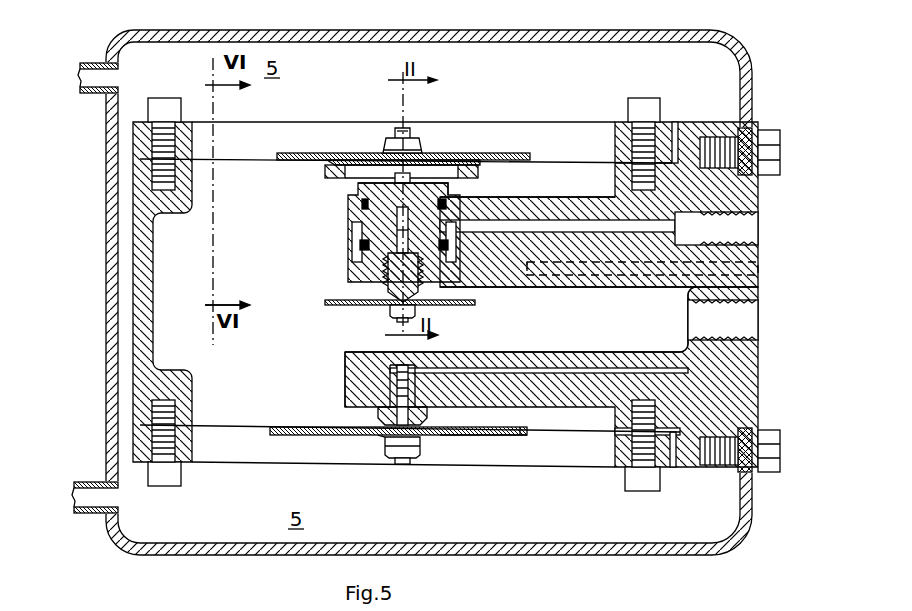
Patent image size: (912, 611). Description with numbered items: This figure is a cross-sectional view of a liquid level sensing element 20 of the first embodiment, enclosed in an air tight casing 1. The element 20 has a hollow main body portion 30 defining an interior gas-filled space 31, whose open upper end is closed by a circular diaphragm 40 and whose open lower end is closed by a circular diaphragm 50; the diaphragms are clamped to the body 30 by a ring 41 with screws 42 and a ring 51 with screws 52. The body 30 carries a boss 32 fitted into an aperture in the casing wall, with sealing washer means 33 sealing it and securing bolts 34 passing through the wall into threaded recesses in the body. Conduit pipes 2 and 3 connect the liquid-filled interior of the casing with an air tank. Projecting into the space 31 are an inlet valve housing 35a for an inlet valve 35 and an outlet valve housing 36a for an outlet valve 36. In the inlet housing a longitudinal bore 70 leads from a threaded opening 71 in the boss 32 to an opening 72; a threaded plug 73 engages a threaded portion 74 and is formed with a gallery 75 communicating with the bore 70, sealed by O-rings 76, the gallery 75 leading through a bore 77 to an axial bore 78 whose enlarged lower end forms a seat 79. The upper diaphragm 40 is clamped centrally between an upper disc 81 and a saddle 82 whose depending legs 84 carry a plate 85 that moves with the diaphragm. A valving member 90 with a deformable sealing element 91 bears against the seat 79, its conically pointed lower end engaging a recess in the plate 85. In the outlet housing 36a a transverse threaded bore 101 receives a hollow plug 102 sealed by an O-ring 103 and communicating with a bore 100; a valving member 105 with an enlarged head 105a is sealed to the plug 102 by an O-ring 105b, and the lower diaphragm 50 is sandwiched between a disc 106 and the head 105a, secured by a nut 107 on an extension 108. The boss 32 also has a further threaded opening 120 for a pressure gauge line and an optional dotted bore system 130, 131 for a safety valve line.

The casing 1 is at (650, 37).
The conduit pipe 2 is at (95, 72).
The conduit pipe 3 is at (91, 488).
The sensing element 20 is at (210, 120).
The main body portion 30 is at (150, 325).
The interior gas-filled space 31 is at (176, 310).
The boss 32 is at (748, 195).
The sealing washer means 33 is at (750, 128).
The securing bolts 34 is at (772, 145).
The inlet valve 35 is at (345, 242).
The inlet valve housing 35a is at (350, 198).
The outlet valve 36 is at (343, 366).
The outlet valve housing 36a is at (340, 356).
The diaphragm 40 is at (245, 157).
The ring 41 is at (678, 150).
The screws 42 is at (640, 116).
The diaphragm 50 is at (246, 463).
The ring 51 is at (676, 470).
The screws 52 is at (642, 492).
The bore 70 is at (555, 198).
The threaded opening 71 is at (748, 237).
The opening 72 is at (462, 200).
The threaded plug 73 is at (356, 190).
The threaded portion 74 is at (432, 275).
The gallery 75 is at (360, 235).
The O-rings 76 is at (440, 165).
The bore 77 is at (412, 172).
The bore 78 is at (375, 243).
The seat 79 is at (445, 238).
The upper disc 81 is at (320, 152).
The saddle 82 is at (490, 152).
The depending legs 84 is at (390, 138).
The plate 85 is at (465, 306).
The valving member 90 is at (420, 303).
The deformable sealing element 91 is at (385, 303).
The bore 100 is at (600, 362).
The threaded bore 101 is at (395, 366).
The plug 102 is at (427, 412).
The O-ring 103 is at (392, 402).
The valving member 105 is at (380, 431).
The enlarged head 105a is at (390, 443).
The O-ring 105b is at (445, 436).
The disc 106 is at (522, 436).
The nut 107 is at (405, 460).
The extension 108 is at (418, 452).
The threaded opening 120 is at (742, 320).
The bore system 130 is at (760, 270).
The bore system 131 is at (530, 270).